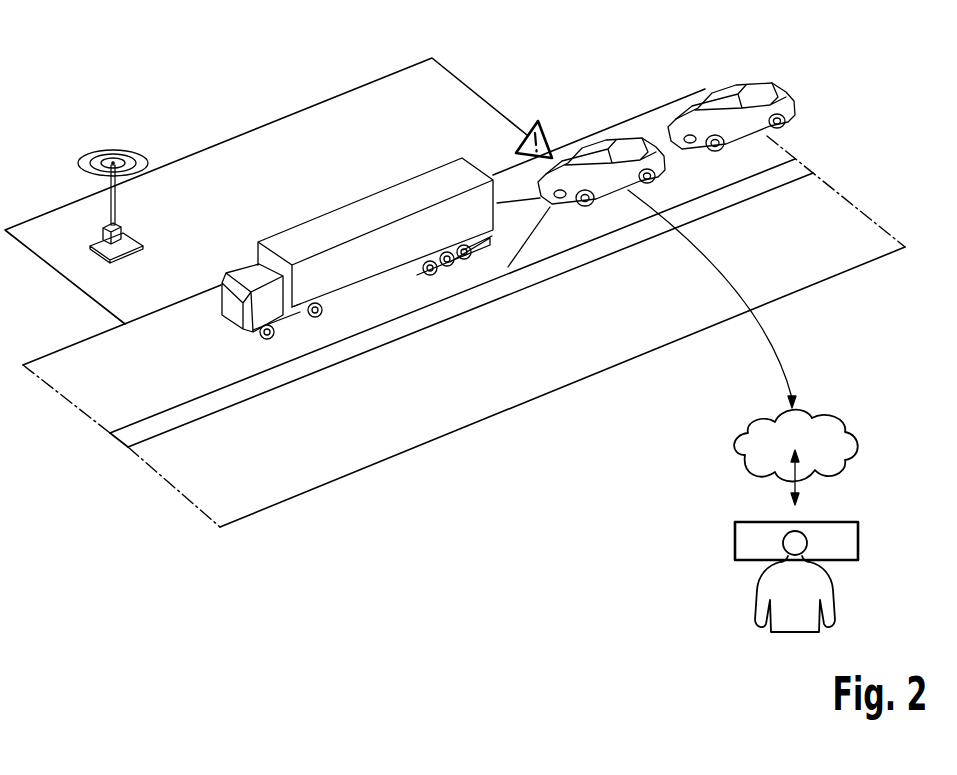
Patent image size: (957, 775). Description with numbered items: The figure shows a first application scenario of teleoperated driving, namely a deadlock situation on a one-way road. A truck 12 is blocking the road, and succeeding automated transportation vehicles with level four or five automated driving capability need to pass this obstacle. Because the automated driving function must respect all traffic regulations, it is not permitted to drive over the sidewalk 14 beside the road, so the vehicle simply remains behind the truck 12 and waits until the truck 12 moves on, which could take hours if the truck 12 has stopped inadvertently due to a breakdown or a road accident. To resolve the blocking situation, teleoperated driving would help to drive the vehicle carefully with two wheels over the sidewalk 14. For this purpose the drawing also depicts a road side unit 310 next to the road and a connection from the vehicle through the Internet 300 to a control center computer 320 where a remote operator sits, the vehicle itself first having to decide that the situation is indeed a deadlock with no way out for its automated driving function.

The truck 12 is at (367, 210).
The sidewalk 14 is at (795, 167).
The Internet 300 is at (732, 445).
The road side unit 310 is at (117, 148).
The control center computer 320 is at (732, 543).